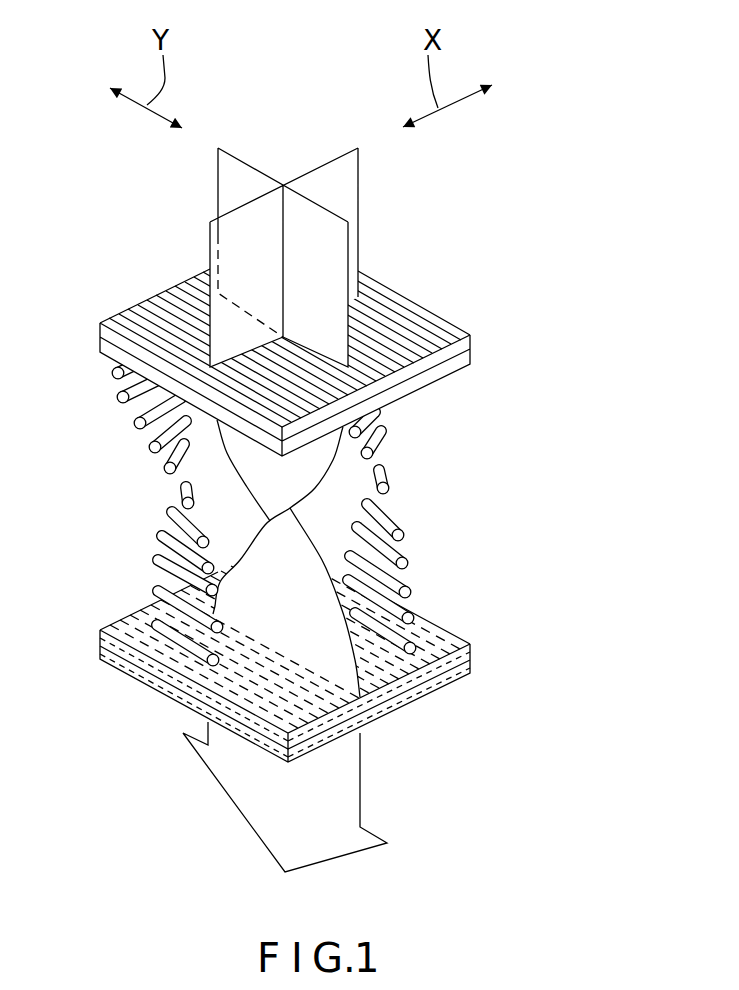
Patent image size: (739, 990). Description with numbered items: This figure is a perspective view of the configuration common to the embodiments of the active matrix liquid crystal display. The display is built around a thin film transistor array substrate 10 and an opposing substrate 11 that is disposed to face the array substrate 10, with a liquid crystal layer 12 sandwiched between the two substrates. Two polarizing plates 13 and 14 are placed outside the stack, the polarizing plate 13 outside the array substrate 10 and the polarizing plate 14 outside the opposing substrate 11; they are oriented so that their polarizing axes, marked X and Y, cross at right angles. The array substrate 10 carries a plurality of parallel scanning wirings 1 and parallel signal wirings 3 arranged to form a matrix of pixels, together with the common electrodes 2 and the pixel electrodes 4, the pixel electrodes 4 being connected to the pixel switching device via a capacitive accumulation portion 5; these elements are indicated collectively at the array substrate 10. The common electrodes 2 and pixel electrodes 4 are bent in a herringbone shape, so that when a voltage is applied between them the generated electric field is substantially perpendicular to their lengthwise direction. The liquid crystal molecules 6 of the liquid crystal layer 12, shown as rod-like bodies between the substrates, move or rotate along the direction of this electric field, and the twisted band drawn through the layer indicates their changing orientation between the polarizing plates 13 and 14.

The scanning wirings 1 is at (362, 427).
The common electrodes 2 is at (427, 378).
The signal wirings 3 is at (427, 378).
The pixel electrodes 4 is at (427, 378).
The capacitive accumulation portion 5 is at (427, 378).
The liquid crystal molecules 6 is at (388, 476).
The thin film transistor array substrate 10 is at (323, 343).
The opposing substrate 11 is at (324, 651).
The liquid crystal layer 12 is at (408, 520).
The polarizing plate 13 is at (470, 331).
The polarizing plate 14 is at (398, 712).